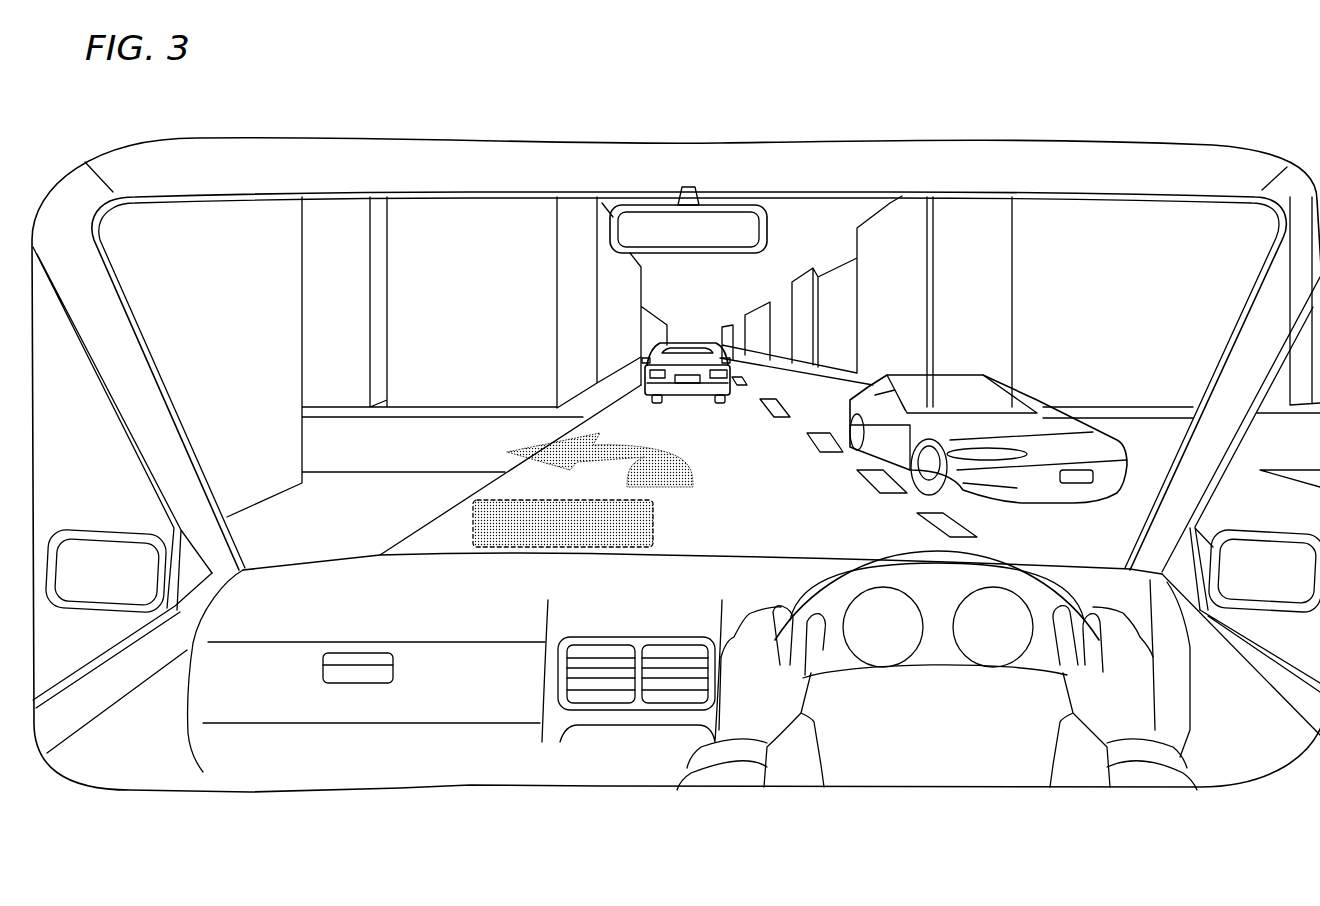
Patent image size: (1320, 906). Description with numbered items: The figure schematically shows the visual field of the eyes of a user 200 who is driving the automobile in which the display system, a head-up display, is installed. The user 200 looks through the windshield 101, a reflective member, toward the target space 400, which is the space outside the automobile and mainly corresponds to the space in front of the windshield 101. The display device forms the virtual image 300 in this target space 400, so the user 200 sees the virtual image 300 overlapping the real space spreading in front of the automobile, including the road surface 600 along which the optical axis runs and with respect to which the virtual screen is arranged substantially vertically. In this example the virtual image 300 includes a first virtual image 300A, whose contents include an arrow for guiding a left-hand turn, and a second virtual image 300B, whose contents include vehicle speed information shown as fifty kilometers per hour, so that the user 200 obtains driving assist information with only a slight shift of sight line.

The windshield 101 is at (1135, 195).
The user 200 is at (1183, 773).
The virtual image 300 is at (656, 493).
The first virtual image 300A is at (693, 472).
The second virtual image 300B is at (653, 522).
The target space 400 is at (723, 315).
The road surface 600 is at (753, 422).